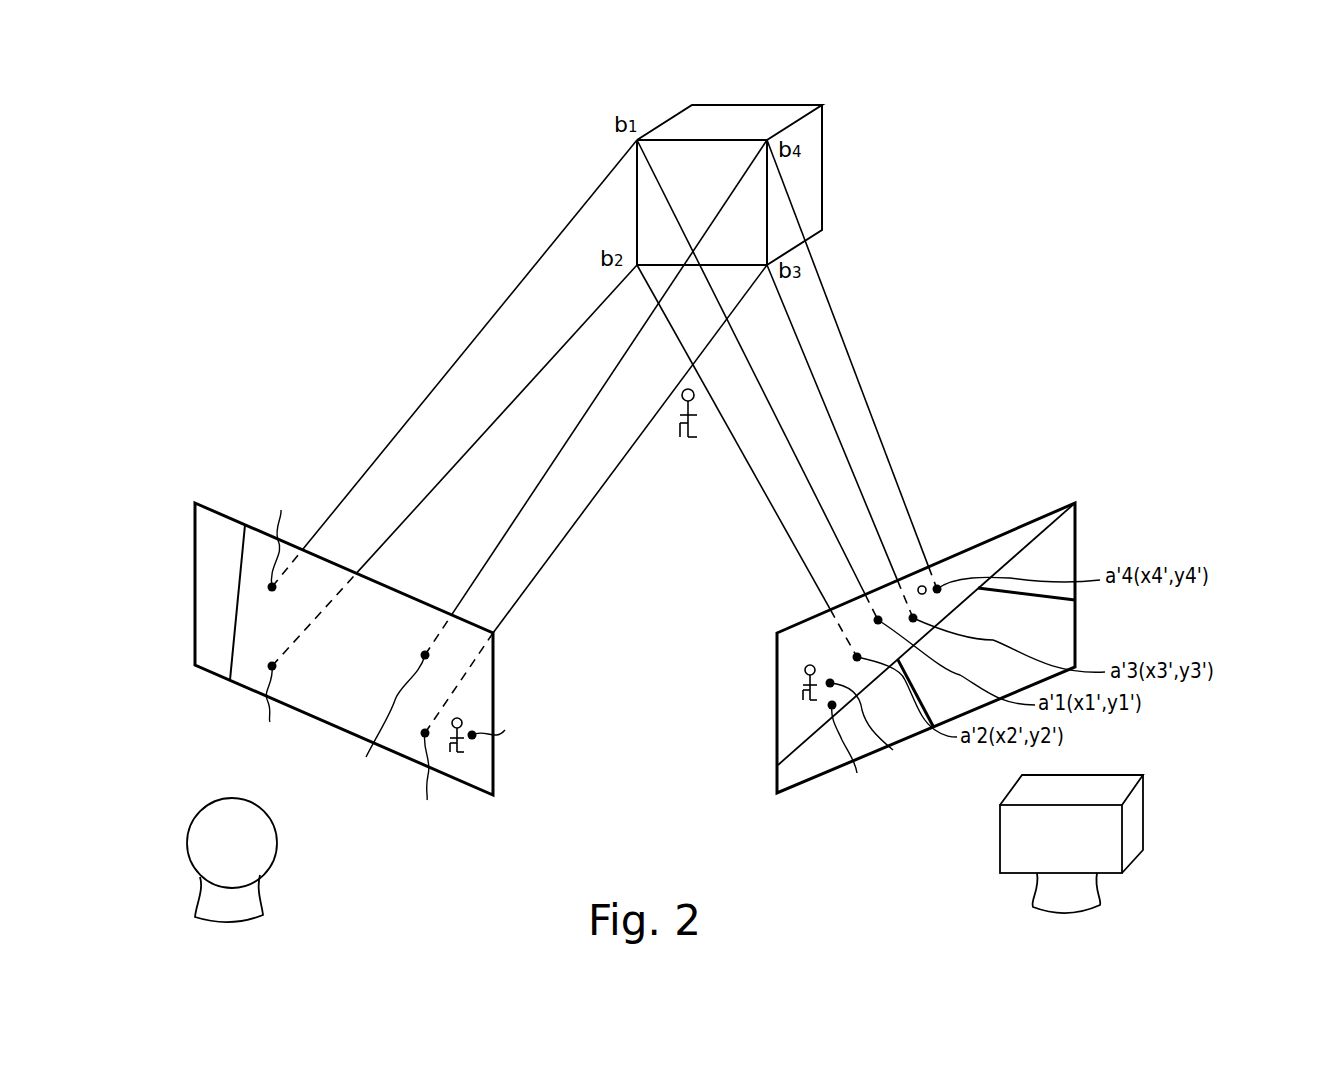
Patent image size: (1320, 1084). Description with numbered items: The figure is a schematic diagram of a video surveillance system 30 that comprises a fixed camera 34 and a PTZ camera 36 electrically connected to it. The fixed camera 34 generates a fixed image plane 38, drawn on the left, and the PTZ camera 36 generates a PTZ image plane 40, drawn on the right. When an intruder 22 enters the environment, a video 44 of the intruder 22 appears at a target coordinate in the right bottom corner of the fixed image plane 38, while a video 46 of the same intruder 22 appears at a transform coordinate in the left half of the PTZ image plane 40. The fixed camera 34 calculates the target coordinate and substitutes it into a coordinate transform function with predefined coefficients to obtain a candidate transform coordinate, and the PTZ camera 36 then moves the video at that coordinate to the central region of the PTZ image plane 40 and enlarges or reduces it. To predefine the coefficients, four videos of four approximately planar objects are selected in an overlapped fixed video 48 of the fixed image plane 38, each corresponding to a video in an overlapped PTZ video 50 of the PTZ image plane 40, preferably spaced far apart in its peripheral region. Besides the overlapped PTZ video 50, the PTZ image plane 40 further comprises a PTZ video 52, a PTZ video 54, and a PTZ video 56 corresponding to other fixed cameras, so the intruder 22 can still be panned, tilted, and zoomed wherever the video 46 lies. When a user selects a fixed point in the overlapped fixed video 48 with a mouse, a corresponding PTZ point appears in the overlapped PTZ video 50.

The video surveillance system 30 is at (1174, 138).
The intruder 22 is at (680, 452).
The fixed image plane 38 is at (194, 520).
The overlapped fixed video 48 is at (406, 614).
The video 44 is at (478, 754).
The fixed camera 34 is at (193, 823).
The PTZ camera 36 is at (1000, 855).
The PTZ image plane 40 is at (1076, 514).
The overlapped PTZ video 50 is at (1000, 542).
The PTZ video 52 is at (826, 752).
The PTZ video 54 is at (972, 668).
The PTZ video 56 is at (1026, 572).
The video 46 is at (780, 693).